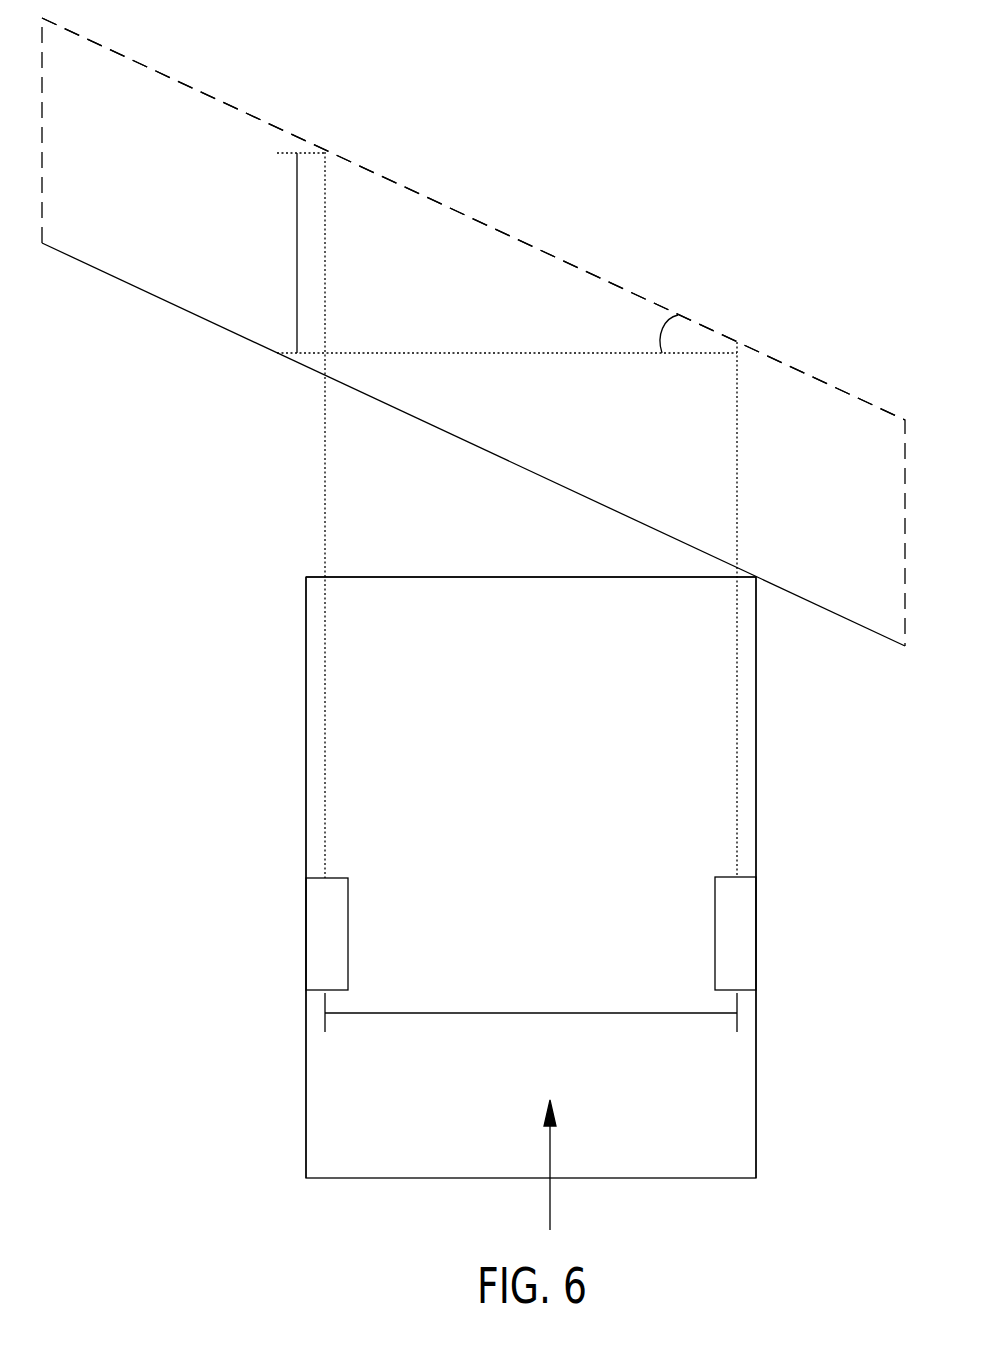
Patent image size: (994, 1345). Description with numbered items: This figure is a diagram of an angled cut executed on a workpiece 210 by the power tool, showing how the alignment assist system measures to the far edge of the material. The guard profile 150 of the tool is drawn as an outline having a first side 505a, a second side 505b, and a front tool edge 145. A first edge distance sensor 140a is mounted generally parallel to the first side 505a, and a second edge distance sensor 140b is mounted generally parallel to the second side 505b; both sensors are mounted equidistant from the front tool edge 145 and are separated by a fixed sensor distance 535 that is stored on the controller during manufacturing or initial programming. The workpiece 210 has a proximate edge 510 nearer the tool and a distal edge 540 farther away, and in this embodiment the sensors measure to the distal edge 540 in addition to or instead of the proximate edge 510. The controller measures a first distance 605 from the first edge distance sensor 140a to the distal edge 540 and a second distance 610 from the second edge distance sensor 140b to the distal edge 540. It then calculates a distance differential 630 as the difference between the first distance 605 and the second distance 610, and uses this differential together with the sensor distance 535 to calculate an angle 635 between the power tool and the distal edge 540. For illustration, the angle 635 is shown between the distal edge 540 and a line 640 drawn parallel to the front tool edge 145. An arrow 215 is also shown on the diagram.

The workpiece 210 is at (839, 548).
The distal edge 540 is at (517, 240).
The proximate edge 510 is at (505, 458).
The distance differential 630 is at (297, 190).
The line 640 is at (413, 350).
The angle 635 is at (660, 333).
The first distance 605 is at (327, 733).
The second distance 610 is at (735, 723).
The guard profile 150 is at (413, 1158).
The front tool edge 145 is at (520, 577).
The first side 505a is at (306, 1095).
The second side 505b is at (756, 1095).
The first edge distance sensor 140a is at (306, 937).
The second edge distance sensor 140b is at (756, 933).
The sensor distance 535 is at (530, 1013).
The direction of travel 215 is at (557, 1153).